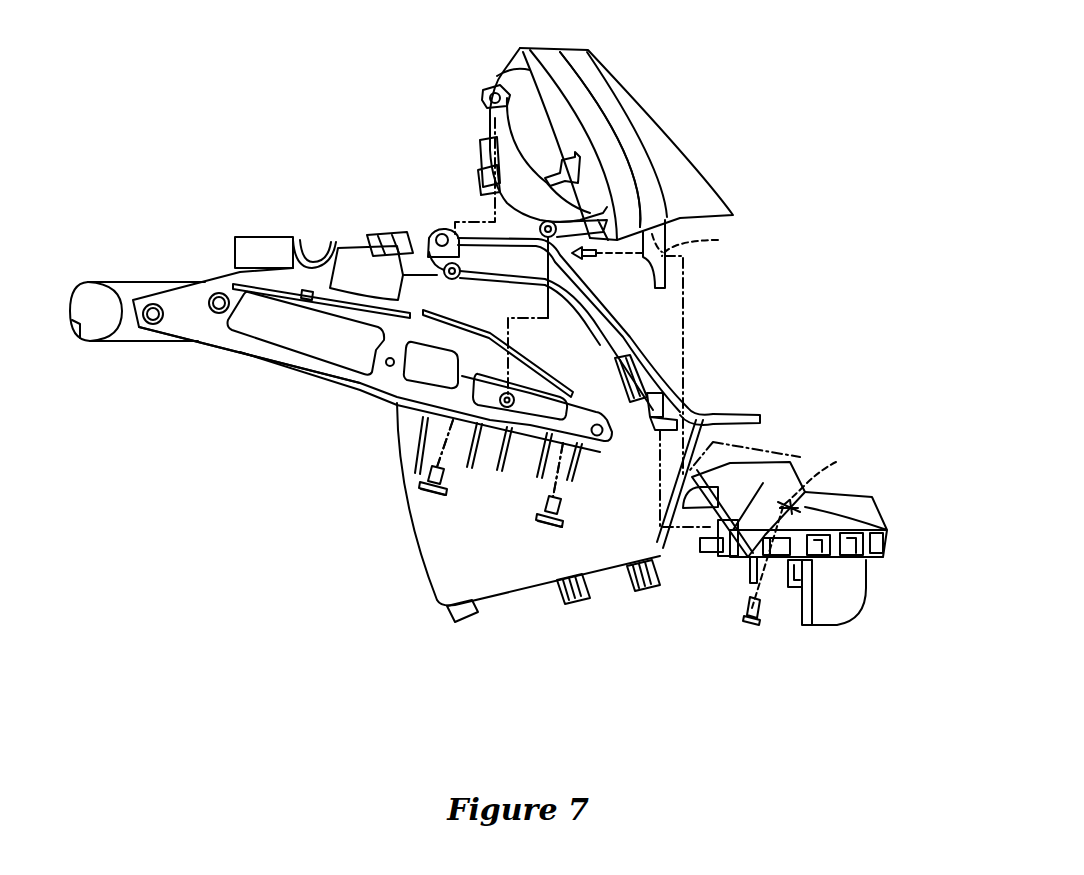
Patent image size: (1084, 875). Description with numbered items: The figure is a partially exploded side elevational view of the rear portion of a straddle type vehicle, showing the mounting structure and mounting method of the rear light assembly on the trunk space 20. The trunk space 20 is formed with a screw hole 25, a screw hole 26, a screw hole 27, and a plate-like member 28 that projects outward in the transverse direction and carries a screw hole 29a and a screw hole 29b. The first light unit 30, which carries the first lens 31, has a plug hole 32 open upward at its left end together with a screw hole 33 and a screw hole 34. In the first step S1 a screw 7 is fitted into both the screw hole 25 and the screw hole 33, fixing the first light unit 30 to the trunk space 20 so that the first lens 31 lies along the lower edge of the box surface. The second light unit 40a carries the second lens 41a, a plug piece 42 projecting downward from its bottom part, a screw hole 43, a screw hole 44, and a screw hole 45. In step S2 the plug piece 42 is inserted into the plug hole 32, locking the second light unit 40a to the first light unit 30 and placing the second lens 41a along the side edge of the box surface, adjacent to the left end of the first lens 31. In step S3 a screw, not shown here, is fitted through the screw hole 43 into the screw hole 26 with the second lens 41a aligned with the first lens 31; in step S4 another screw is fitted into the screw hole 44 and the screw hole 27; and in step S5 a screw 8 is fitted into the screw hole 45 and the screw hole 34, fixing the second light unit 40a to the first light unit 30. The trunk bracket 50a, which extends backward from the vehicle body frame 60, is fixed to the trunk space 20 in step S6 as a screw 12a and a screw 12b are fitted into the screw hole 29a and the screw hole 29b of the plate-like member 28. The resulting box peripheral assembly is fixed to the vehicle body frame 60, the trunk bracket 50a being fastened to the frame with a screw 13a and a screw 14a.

The screw 7 is at (760, 608).
The screw 8 is at (585, 257).
The screw 12a is at (432, 497).
The screw 12b is at (553, 523).
The screw 13a is at (157, 326).
The screw 14a is at (218, 314).
The trunk space 20 is at (425, 212).
The screw hole 25 is at (710, 414).
The screw hole 26 is at (426, 238).
The screw hole 27 is at (465, 390).
The plate-like member 28 is at (423, 400).
The screw hole 29a is at (420, 443).
The screw hole 29b is at (533, 455).
The first light unit 30 is at (863, 490).
The first lens 31 is at (732, 535).
The plug hole 32 is at (713, 548).
The screw hole 33 is at (802, 523).
The screw hole 34 is at (685, 500).
The second light unit 40a is at (635, 62).
The second lens 41a is at (647, 130).
The plug piece 42 is at (668, 272).
The screw hole 43 is at (500, 84).
The screw hole 44 is at (560, 217).
The screw hole 45 is at (698, 242).
The trunk bracket 50a is at (184, 298).
The vehicle body frame 60 is at (118, 290).
The step S1 is at (783, 456).
The step S2 is at (660, 488).
The step S3 is at (478, 222).
The step S4 is at (508, 330).
The step S5 is at (685, 316).
The step S6 is at (447, 455).